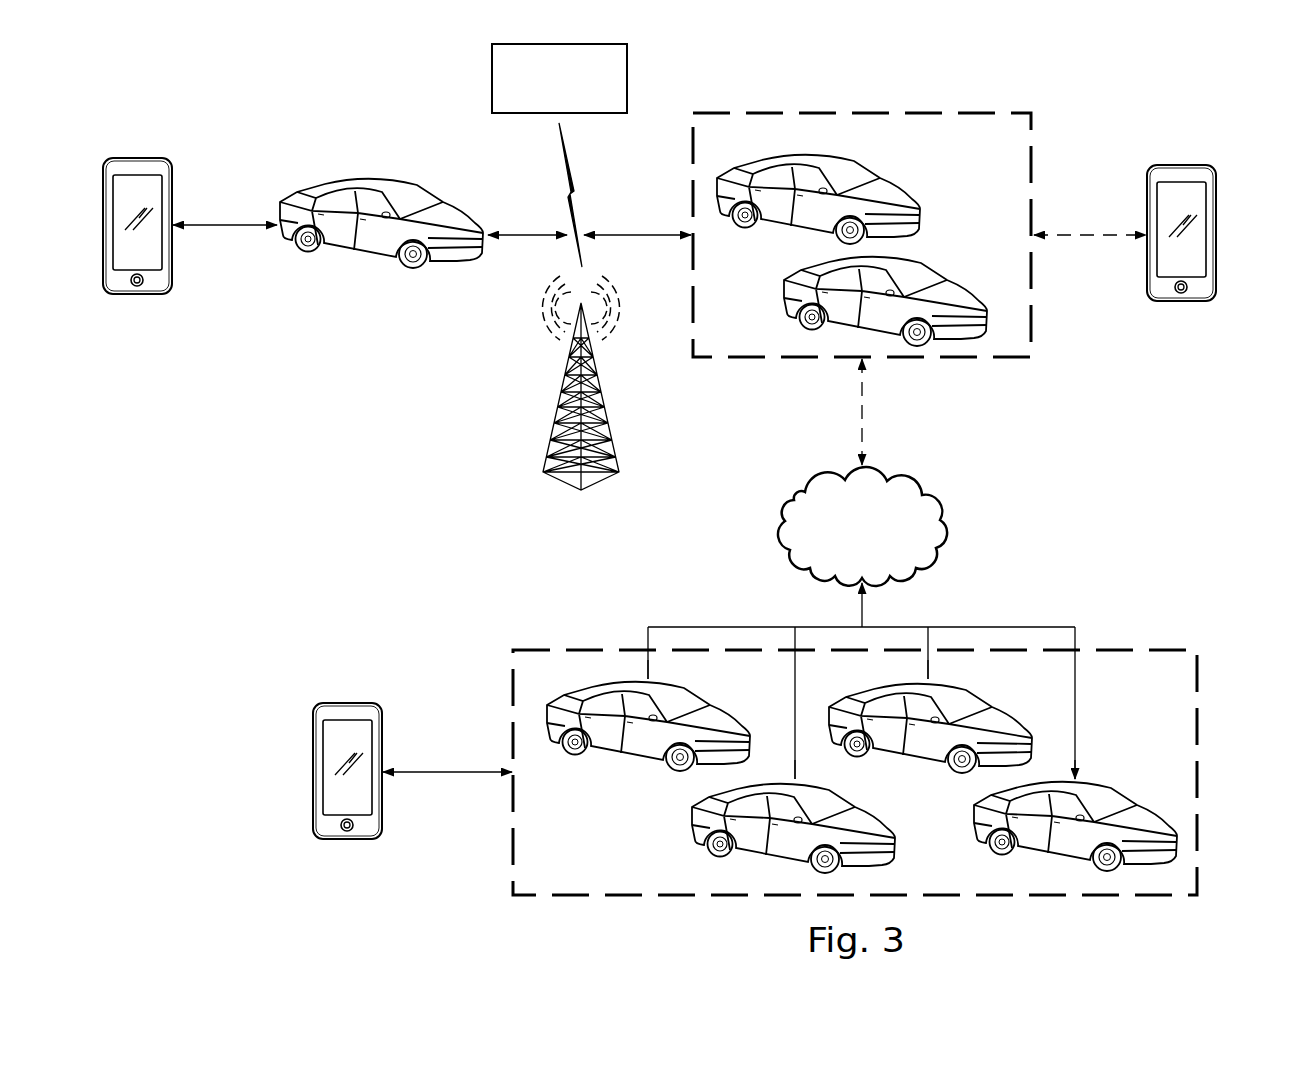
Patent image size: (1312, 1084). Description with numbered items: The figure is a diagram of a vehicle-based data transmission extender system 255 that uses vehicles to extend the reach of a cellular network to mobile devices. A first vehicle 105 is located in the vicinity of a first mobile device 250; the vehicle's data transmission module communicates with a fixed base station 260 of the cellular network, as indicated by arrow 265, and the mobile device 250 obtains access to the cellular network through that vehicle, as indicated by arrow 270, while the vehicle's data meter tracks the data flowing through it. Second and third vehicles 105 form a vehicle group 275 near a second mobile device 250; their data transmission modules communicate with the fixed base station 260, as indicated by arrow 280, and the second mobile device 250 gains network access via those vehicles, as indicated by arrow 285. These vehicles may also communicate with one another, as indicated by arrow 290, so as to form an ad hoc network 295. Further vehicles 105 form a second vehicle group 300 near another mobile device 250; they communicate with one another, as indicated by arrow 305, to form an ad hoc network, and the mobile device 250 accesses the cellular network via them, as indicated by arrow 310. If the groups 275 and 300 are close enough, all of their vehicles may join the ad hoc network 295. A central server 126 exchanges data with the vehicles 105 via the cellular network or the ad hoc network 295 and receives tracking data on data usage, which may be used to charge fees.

The vehicle 105 is at (372, 178).
The central server 126 is at (492, 80).
The mobile device 250 is at (133, 158).
The vehicle-based data transmission extender system 255 is at (1258, 96).
The fixed base station 260 is at (561, 397).
The arrow 265 is at (521, 233).
The arrow 270 is at (217, 223).
The vehicle group 275 is at (918, 109).
The arrow 280 is at (635, 233).
The arrow 285 is at (1073, 233).
The arrow 290 is at (865, 402).
The ad hoc network 295 is at (923, 491).
The vehicle group 300 is at (1124, 647).
The arrow 305 is at (996, 627).
The arrow 310 is at (447, 775).